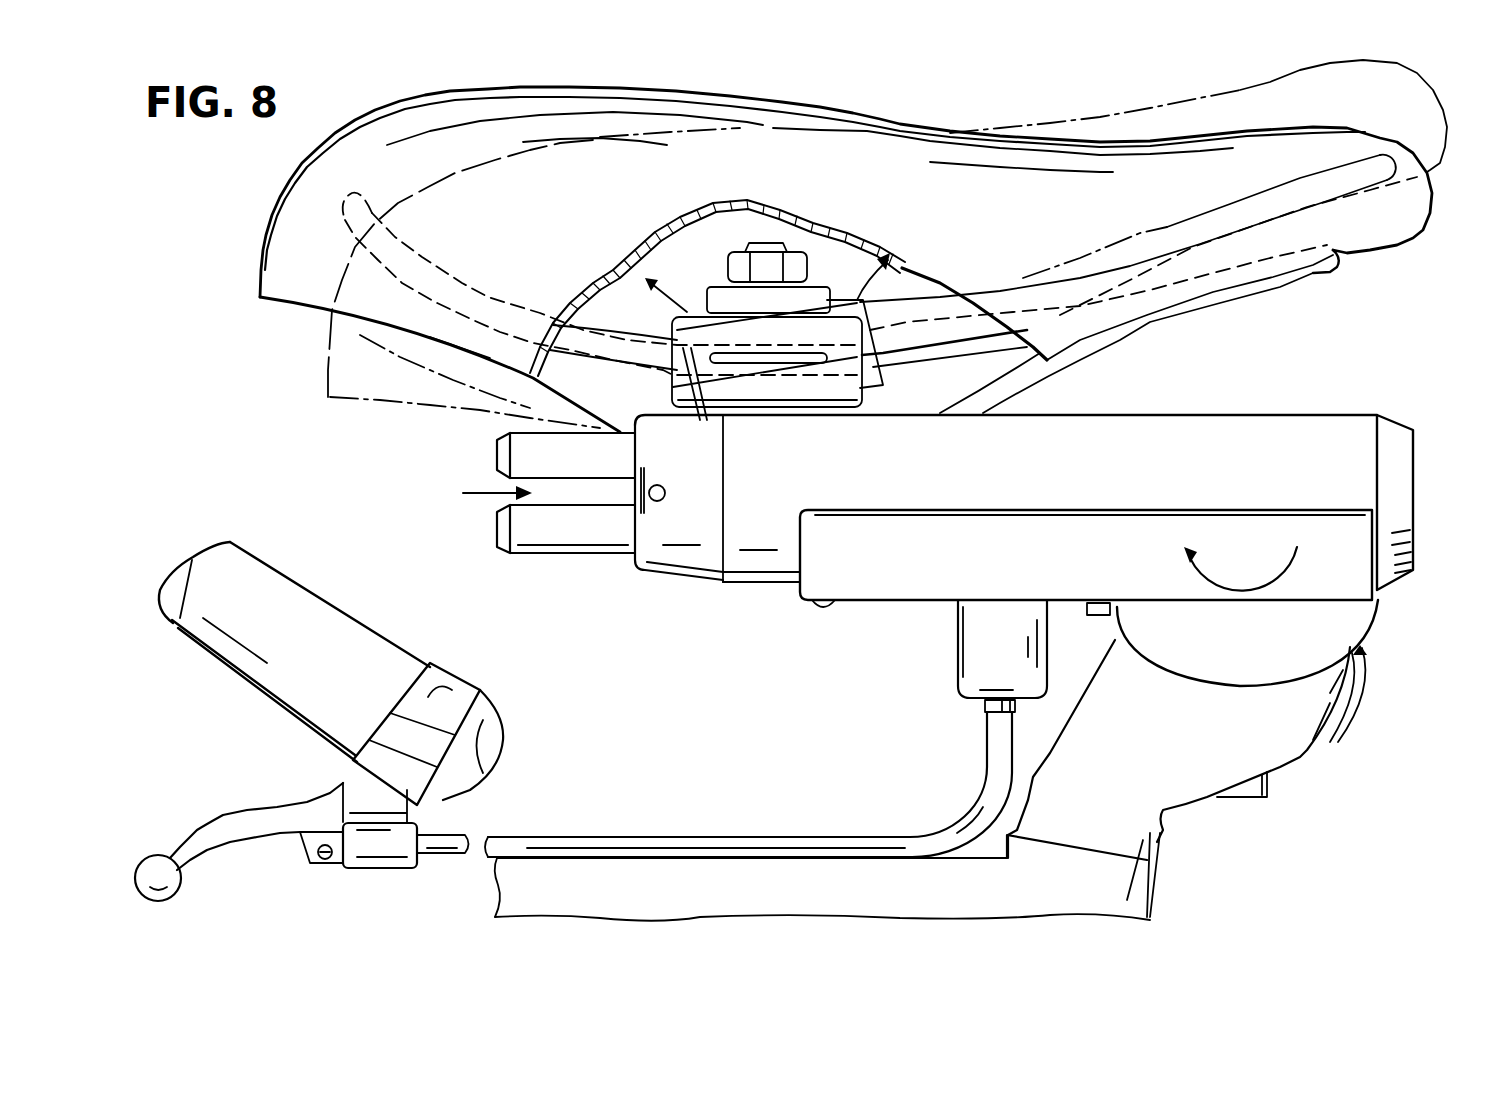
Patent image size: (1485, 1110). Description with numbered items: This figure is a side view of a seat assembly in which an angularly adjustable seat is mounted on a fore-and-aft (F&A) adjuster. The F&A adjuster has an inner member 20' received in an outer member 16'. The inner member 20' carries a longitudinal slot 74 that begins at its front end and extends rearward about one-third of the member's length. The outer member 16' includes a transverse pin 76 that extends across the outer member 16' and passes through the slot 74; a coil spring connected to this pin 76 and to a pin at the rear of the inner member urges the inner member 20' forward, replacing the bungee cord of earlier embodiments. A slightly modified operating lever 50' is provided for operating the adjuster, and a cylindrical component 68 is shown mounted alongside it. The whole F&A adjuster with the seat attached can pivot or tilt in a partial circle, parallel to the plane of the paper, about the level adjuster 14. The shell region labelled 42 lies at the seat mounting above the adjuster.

The saddle shell 42 is at (648, 322).
The longitudinal slot 74 is at (503, 503).
The inner member 20' is at (566, 526).
The transverse pin 76 is at (654, 501).
The outer member 16' is at (1024, 563).
The locking cylinder 68 is at (293, 592).
The operating lever 50' is at (302, 822).
The level adjuster 14 is at (1352, 733).